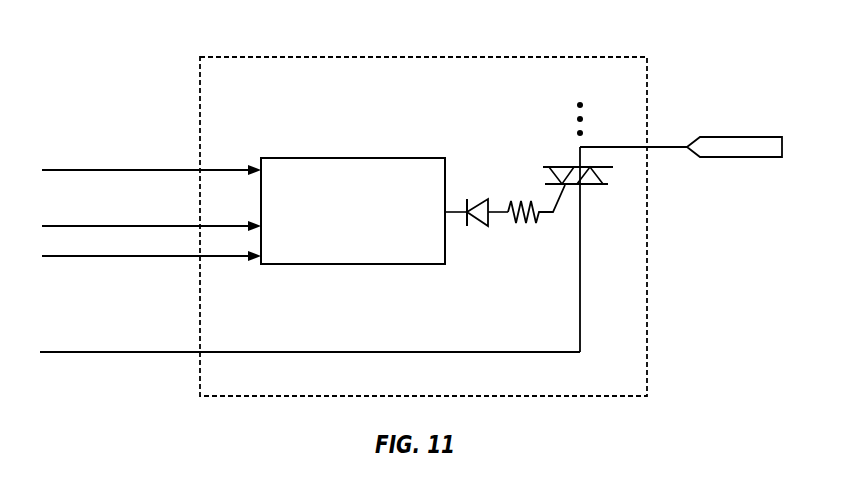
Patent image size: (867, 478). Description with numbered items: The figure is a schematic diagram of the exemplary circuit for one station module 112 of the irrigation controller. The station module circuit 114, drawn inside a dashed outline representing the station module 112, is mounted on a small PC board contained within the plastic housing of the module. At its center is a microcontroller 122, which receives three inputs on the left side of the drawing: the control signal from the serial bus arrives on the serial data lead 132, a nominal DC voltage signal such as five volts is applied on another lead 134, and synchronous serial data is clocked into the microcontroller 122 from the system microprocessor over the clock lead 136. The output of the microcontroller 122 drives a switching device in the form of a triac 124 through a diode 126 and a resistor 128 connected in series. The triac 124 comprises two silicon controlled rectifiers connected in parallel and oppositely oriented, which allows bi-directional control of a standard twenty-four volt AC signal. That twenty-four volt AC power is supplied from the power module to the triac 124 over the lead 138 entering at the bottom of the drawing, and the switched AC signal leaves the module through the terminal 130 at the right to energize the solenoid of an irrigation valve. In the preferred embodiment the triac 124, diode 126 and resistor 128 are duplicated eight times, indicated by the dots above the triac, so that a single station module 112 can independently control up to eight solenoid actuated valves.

The station module 112 is at (232, 57).
The station module circuit 114 is at (316, 138).
The microcontroller 122 is at (308, 265).
The triac 124 is at (587, 190).
The diode 126 is at (478, 224).
The resistor 128 is at (522, 206).
The terminal 130 is at (733, 137).
The serial data lead 132 is at (178, 226).
The lead 134 is at (183, 170).
The clock lead 136 is at (178, 256).
The lead 138 is at (178, 352).